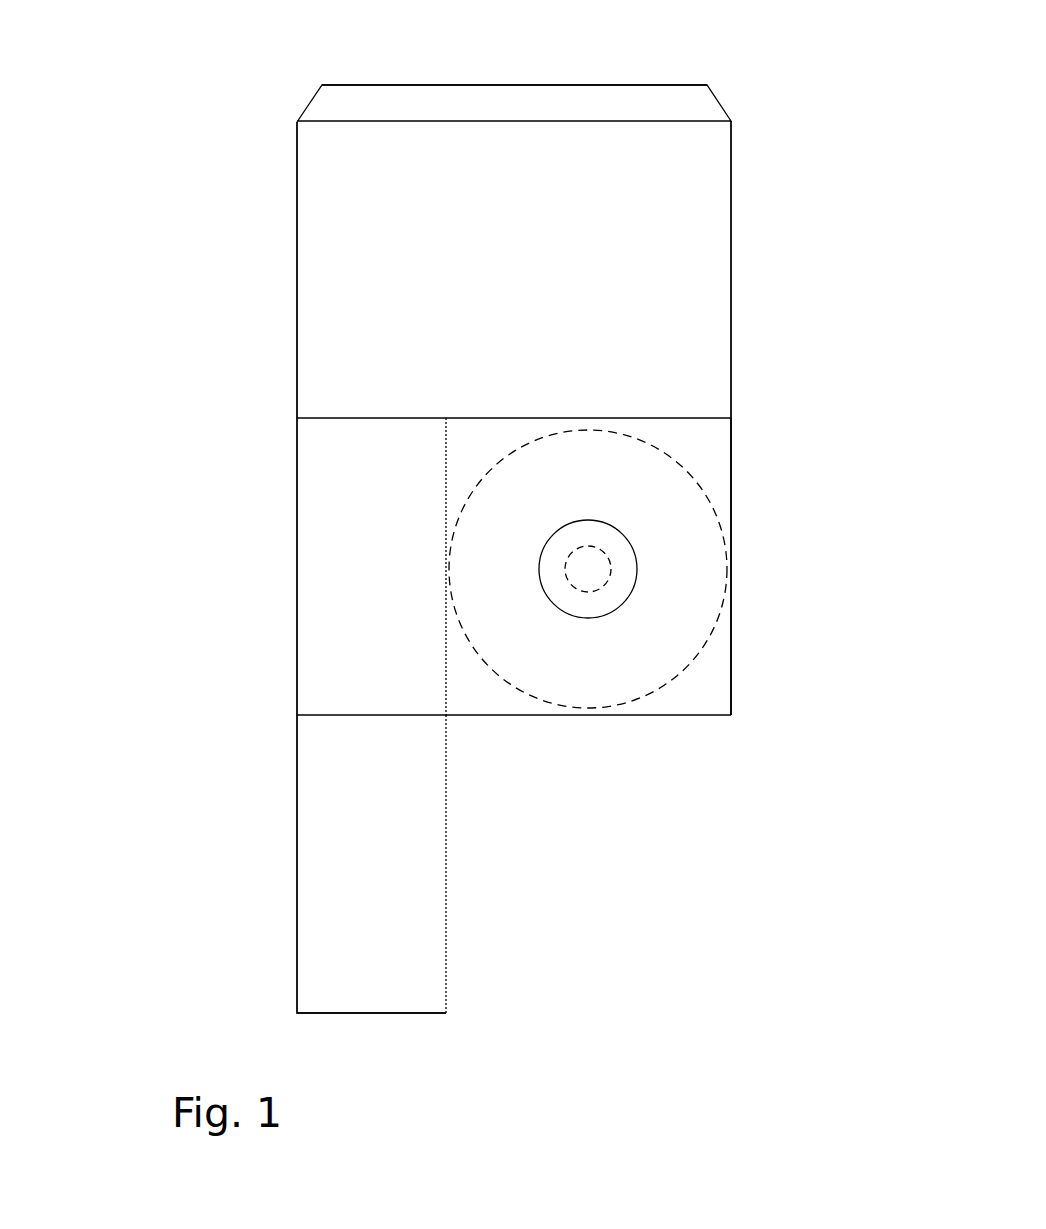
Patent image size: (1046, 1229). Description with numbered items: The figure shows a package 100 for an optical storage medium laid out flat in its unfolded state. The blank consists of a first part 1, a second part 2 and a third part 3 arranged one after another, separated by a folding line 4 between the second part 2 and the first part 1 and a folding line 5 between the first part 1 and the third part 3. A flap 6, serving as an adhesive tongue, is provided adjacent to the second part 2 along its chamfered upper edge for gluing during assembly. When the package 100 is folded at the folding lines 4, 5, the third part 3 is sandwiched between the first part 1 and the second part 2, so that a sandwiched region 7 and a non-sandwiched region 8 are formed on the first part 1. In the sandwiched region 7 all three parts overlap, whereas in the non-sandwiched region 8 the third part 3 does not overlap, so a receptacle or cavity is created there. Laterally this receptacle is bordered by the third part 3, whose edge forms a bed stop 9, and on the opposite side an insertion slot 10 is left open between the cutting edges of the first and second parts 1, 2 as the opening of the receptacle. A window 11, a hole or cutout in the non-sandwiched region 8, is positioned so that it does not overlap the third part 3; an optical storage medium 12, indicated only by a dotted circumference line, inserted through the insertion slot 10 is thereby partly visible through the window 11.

The package 100 is at (320, 48).
The flap 6 is at (342, 108).
The second part 2 is at (297, 263).
The folding line 4 is at (333, 418).
The first part 1 is at (297, 583).
The folding line 5 is at (331, 715).
The third part 3 is at (296, 858).
The sandwiched region 7 is at (412, 695).
The bed stop 9 is at (446, 920).
The non-sandwiched region 8 is at (698, 693).
The insertion slot 10 is at (735, 485).
The optical storage medium 12 is at (722, 615).
The window 11 is at (632, 595).